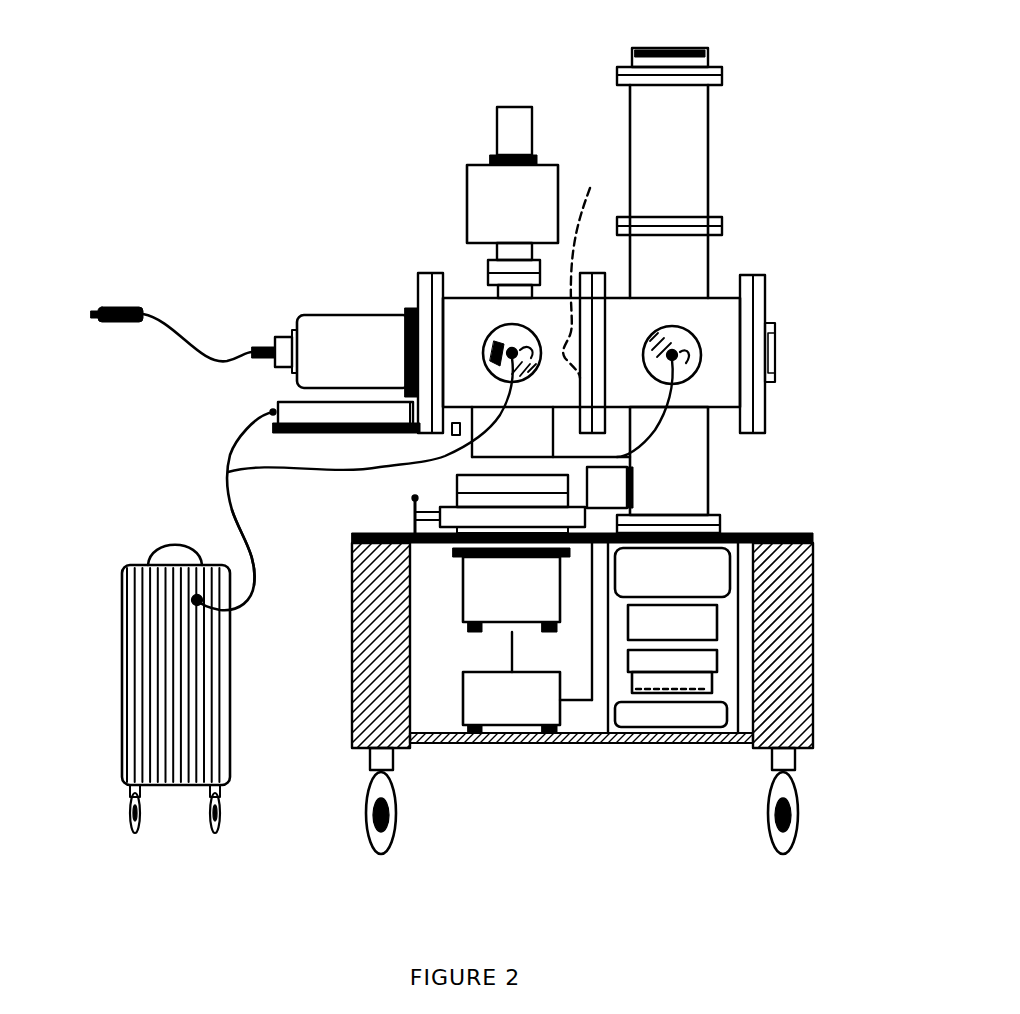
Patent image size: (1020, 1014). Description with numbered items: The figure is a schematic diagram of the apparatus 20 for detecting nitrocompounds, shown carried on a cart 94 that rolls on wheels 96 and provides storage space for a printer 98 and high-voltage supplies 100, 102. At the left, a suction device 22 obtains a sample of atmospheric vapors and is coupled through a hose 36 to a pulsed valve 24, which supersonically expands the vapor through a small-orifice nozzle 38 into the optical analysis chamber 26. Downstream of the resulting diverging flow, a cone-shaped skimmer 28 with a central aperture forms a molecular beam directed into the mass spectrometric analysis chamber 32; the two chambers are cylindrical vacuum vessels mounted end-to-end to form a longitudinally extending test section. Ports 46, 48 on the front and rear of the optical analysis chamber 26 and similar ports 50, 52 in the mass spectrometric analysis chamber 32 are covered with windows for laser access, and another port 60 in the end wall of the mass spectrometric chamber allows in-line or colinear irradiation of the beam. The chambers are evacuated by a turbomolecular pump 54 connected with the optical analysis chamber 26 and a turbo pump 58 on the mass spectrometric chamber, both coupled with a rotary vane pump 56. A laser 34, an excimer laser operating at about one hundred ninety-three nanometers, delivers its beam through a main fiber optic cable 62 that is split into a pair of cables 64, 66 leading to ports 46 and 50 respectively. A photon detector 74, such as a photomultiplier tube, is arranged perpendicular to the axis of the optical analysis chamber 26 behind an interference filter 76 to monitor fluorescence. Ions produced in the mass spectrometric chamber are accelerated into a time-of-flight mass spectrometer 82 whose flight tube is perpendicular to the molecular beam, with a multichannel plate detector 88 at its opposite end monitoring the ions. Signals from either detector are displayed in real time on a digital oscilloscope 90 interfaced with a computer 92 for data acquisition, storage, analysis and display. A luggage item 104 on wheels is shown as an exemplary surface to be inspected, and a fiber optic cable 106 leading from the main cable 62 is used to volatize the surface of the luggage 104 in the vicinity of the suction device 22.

The apparatus for detecting nitrocompounds 20 is at (276, 158).
The suction device 22 is at (118, 305).
The pulsed valve 24 is at (328, 315).
The optical analysis chamber 26 is at (465, 298).
The skimmer 28 is at (585, 269).
The mass spectrometric analysis chamber 32 is at (725, 296).
The laser 34 is at (280, 403).
The hose 36 is at (190, 334).
The nozzle 38 is at (512, 350).
The port 46 is at (548, 188).
The port 48 is at (532, 348).
The port 50 is at (773, 305).
The port 52 is at (700, 343).
The turbomolecular pump 54 is at (497, 602).
The rotary vane pump 56 is at (497, 710).
The turbo pump 58 is at (655, 491).
The port 60 is at (775, 353).
The main fiber optic cable 62 is at (230, 454).
The fiber optic cable 64 is at (440, 464).
The fiber optic cable 66 is at (663, 428).
The photon detector 74 is at (497, 122).
The interference filter 76 is at (497, 221).
The time-of-flight mass spectrometer 82 is at (655, 172).
The multichannel plate detector 88 is at (708, 58).
The digital oscilloscope 90 is at (657, 587).
The computer 92 is at (657, 635).
The cart 94 is at (813, 573).
The wheels 96 is at (396, 813).
The printer 98 is at (727, 712).
The high-voltage supply 100 is at (717, 660).
The high-voltage supply 102 is at (712, 682).
The luggage item 104 is at (122, 676).
The fiber optic cable 106 is at (237, 521).